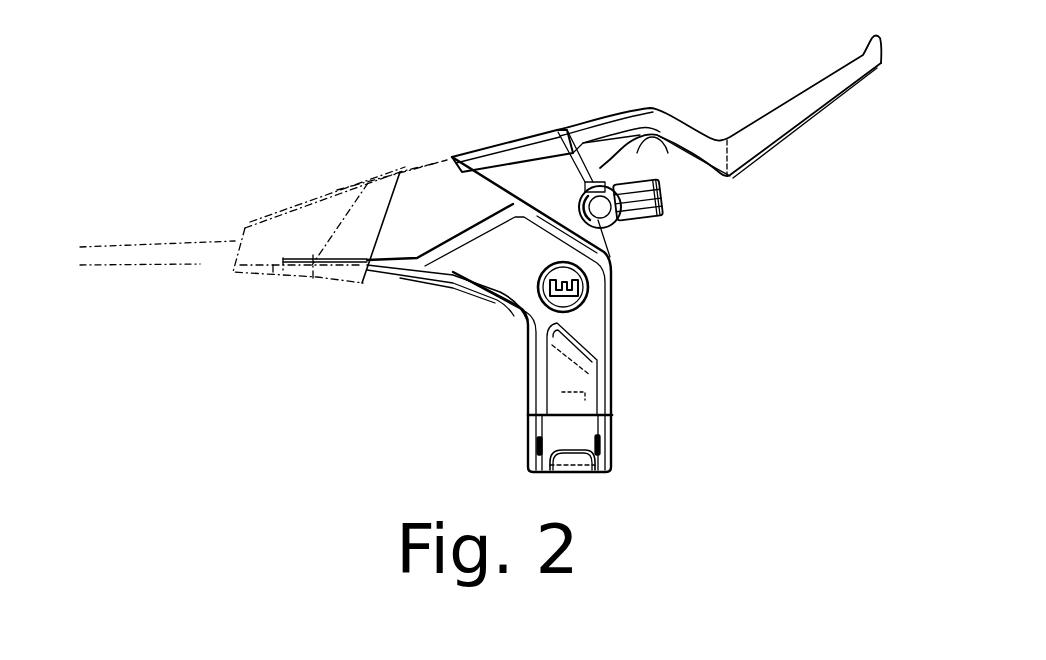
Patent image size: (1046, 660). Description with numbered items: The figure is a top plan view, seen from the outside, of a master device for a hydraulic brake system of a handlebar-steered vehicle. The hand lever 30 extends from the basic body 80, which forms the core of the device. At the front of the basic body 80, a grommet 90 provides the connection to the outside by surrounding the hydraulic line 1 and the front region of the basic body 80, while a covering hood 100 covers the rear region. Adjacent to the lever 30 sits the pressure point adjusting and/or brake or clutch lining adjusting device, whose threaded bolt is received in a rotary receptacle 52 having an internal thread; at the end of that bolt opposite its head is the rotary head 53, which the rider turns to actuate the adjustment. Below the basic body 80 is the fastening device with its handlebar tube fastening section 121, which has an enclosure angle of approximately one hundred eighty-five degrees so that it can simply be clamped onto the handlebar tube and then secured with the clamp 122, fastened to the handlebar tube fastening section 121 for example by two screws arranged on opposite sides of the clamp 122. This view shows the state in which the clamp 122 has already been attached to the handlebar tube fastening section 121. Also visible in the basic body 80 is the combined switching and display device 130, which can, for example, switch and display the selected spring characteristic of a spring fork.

The hydraulic line 1 is at (187, 258).
The lever 30 is at (800, 107).
The rotary receptacle 52 is at (619, 223).
The rotary head 53 is at (660, 212).
The basic body 80 is at (455, 271).
The grommet 90 is at (343, 230).
The covering hood 100 is at (520, 160).
The handlebar tube fastening section 121 is at (550, 385).
The clamp 122 is at (600, 449).
The combined switching and display device 130 is at (588, 305).